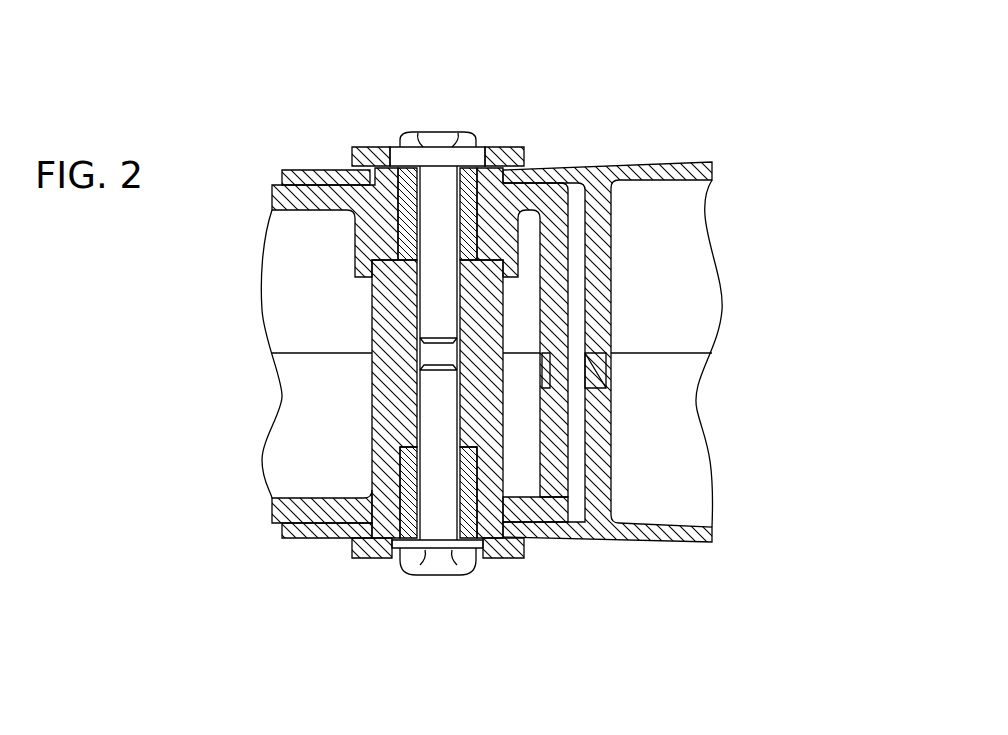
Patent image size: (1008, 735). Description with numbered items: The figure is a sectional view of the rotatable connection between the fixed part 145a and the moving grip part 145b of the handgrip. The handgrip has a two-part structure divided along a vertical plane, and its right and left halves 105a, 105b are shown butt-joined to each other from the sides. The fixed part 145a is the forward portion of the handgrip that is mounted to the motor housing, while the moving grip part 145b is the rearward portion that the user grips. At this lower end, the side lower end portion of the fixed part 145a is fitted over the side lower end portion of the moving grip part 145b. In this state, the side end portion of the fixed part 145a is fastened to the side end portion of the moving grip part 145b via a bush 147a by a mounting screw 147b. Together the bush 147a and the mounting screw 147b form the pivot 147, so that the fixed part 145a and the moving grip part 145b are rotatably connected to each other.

The right half 105a is at (545, 323).
The left half 105b is at (565, 470).
The fixed part 145a is at (617, 554).
The moving grip part 145b is at (343, 430).
The pivot 147 is at (509, 121).
The bush 147a is at (362, 147).
The mounting screw 147b is at (433, 128).